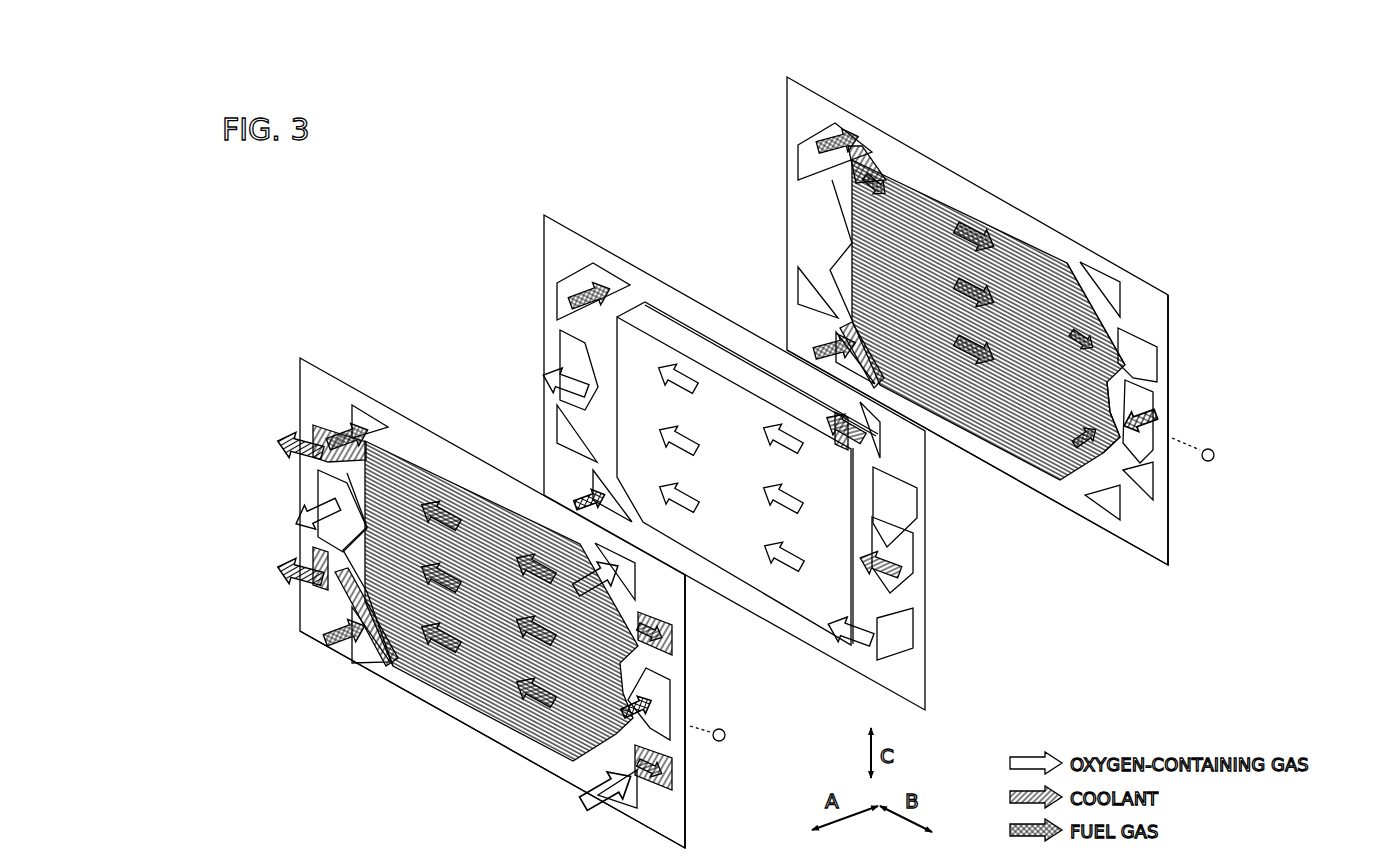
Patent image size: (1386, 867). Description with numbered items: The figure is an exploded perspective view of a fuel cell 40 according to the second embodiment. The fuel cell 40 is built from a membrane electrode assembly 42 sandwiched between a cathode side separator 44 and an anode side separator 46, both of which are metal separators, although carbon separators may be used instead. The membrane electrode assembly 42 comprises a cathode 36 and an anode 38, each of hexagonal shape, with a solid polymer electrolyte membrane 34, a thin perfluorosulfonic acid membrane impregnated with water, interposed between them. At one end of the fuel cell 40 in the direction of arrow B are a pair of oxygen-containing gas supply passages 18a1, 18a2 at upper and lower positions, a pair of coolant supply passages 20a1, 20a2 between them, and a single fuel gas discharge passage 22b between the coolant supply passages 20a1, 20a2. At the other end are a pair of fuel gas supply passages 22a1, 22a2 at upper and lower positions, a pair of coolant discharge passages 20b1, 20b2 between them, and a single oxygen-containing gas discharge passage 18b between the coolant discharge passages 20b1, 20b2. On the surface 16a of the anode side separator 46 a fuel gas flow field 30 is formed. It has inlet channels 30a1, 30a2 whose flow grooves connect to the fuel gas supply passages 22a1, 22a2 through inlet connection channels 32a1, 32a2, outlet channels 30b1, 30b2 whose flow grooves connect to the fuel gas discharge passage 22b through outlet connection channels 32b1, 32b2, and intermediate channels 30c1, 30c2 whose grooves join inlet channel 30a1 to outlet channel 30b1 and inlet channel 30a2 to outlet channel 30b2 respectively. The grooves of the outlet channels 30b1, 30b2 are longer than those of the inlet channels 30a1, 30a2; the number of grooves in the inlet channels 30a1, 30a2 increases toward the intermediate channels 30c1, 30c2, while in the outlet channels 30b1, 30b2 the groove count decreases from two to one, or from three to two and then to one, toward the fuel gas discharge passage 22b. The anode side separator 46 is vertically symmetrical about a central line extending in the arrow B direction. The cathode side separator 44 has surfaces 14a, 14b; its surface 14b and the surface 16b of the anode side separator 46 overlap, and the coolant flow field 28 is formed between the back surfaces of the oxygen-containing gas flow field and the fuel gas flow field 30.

The fuel cell 40 is at (421, 207).
The membrane electrode assembly 42 is at (543, 214).
The anode 38 is at (652, 318).
The cathode 36 is at (807, 592).
The solid polymer electrolyte membrane 34 is at (552, 347).
The cathode side separator 44 is at (300, 356).
The anode side separator 46 is at (1152, 282).
The surface of first separator facing MEA 14a is at (680, 830).
The surface of cathode side separator 14b is at (672, 803).
The surface of anode side separator 16a is at (1150, 516).
The surface of anode side separator 16b is at (1158, 543).
The coolant flow field 28 is at (465, 495).
The fuel gas flow field 30 is at (950, 205).
The oxygen-containing gas supply passage 18a1 is at (632, 585).
The oxygen-containing gas supply passage 18a2 is at (628, 802).
The oxygen-containing gas discharge passage 18b is at (322, 490).
The coolant supply passage 20a1 is at (670, 657).
The coolant supply passage 20a2 is at (672, 760).
The coolant discharge passage 20b1 is at (318, 455).
The coolant discharge passage 20b2 is at (318, 580).
The fuel gas supply passage 22a1 is at (375, 430).
The fuel gas supply passage 22a2 is at (350, 630).
The fuel gas discharge passage 22b is at (652, 683).
The inlet channel 30a1 is at (893, 183).
The inlet channel 30a2 is at (845, 318).
The outlet channel 30b1 is at (1088, 305).
The outlet channel 30b2 is at (1090, 462).
The intermediate channel 30c1 is at (1010, 250).
The intermediate channel 30c2 is at (1015, 432).
The inlet connection channel 32a1 is at (882, 170).
The inlet connection channel 32a2 is at (840, 337).
The outlet connection channel 32b1 is at (1128, 365).
The outlet connection channel 32b2 is at (1125, 418).